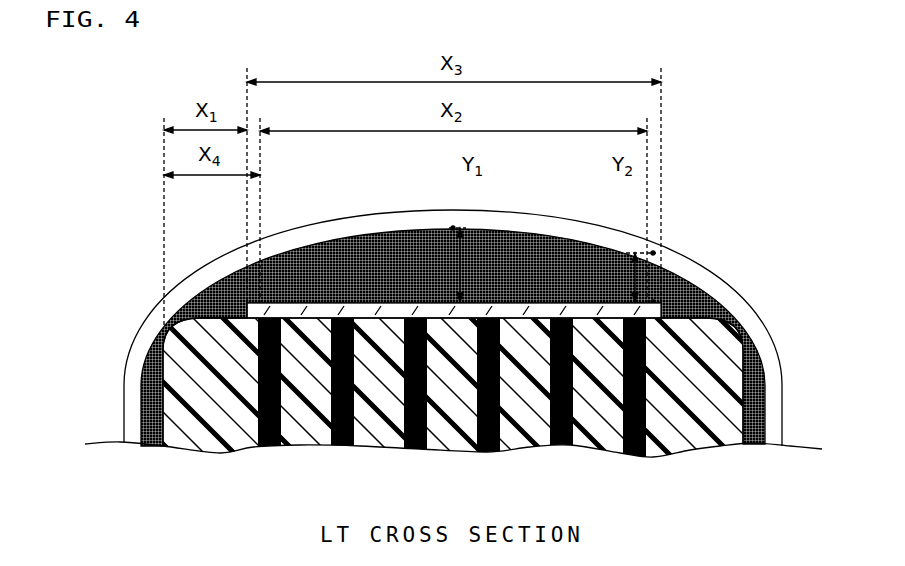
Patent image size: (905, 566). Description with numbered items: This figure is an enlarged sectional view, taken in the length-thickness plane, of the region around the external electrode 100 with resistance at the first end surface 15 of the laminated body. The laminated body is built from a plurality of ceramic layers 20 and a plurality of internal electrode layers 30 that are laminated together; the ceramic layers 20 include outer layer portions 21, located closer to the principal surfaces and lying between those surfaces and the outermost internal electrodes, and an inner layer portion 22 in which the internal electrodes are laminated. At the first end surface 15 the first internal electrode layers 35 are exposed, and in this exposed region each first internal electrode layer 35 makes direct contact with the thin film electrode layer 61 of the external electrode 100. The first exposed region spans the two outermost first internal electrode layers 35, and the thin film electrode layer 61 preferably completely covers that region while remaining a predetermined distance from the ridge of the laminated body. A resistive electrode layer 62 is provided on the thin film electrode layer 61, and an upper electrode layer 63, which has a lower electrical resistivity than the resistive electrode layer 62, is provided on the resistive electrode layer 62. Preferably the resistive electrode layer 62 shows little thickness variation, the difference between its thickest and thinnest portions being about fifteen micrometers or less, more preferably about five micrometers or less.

The external electrode with resistance 100 is at (750, 136).
The ceramic layers 20 is at (452, 401).
The outer layer portions 21 is at (713, 417).
The inner layer portion 22 is at (530, 430).
The internal electrode layers 30 is at (450, 410).
The first internal electrode layer 35 is at (653, 471).
The thin film electrode layer 61 is at (521, 305).
The resistive electrode layer 62 is at (677, 290).
The upper electrode layer 63 is at (720, 288).
The first end surface 15 is at (230, 316).